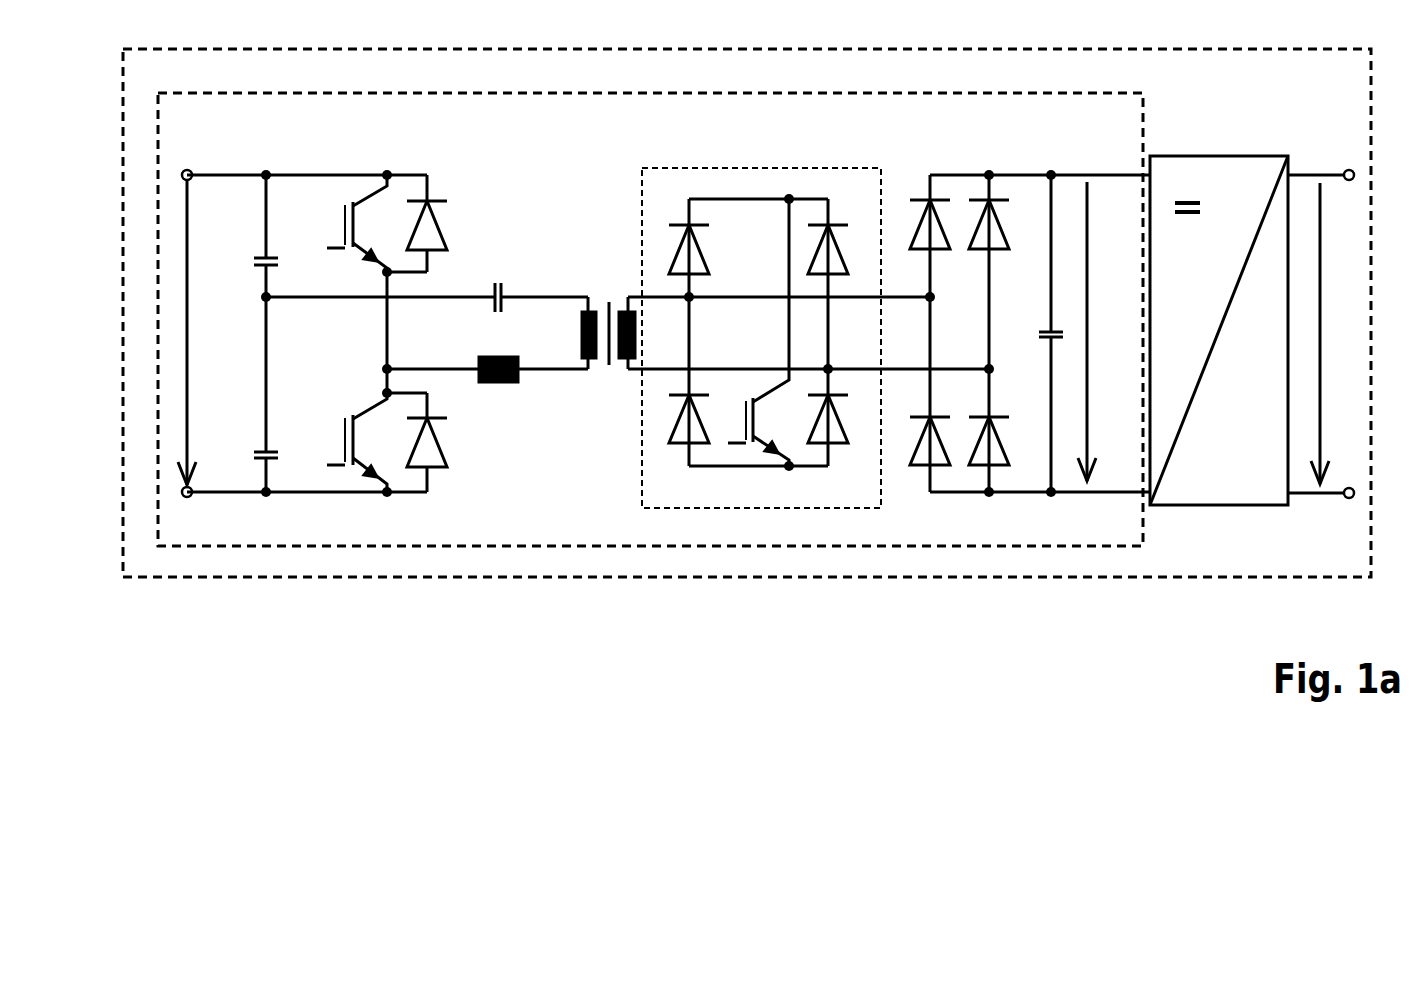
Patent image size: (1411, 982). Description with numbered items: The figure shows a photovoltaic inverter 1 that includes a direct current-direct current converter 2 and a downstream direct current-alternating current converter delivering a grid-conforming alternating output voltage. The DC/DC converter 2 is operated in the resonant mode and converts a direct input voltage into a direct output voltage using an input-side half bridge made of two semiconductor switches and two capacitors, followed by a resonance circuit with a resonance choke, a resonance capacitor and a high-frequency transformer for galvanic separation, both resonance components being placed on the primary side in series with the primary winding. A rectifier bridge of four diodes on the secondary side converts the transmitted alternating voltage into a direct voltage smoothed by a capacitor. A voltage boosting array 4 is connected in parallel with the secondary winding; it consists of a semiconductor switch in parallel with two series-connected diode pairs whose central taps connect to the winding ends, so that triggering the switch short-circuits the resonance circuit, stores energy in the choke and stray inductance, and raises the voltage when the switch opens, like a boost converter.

The photovoltaic inverter 1 is at (1343, 49).
The DC/DC converter 2 is at (818, 88).
The voltage boosting array 4 is at (642, 458).